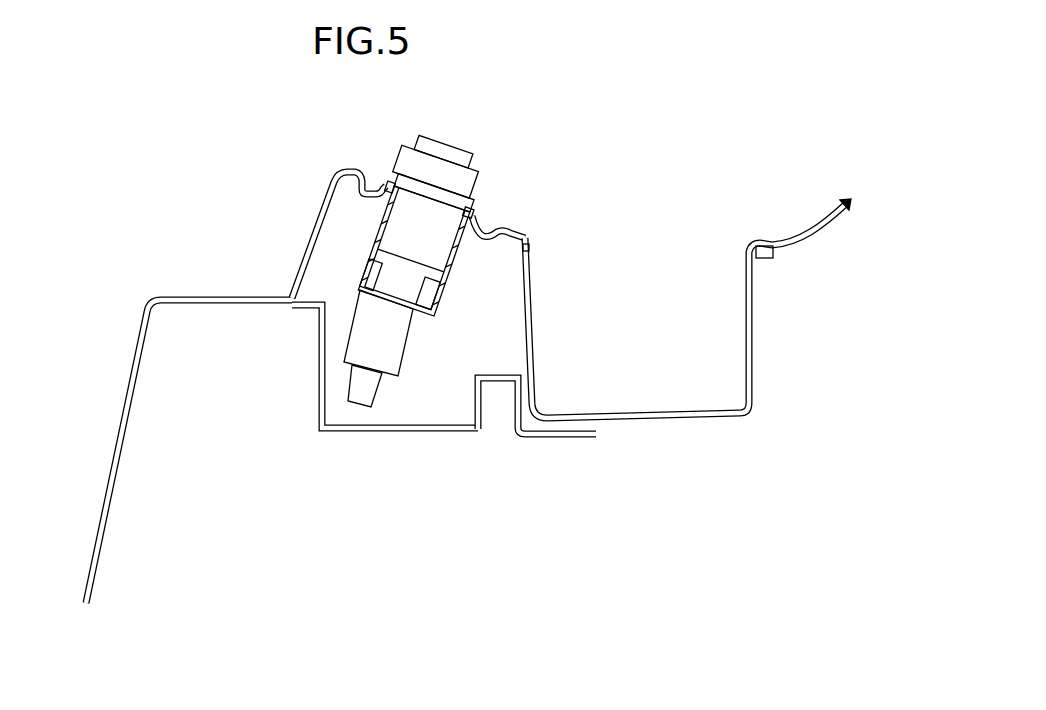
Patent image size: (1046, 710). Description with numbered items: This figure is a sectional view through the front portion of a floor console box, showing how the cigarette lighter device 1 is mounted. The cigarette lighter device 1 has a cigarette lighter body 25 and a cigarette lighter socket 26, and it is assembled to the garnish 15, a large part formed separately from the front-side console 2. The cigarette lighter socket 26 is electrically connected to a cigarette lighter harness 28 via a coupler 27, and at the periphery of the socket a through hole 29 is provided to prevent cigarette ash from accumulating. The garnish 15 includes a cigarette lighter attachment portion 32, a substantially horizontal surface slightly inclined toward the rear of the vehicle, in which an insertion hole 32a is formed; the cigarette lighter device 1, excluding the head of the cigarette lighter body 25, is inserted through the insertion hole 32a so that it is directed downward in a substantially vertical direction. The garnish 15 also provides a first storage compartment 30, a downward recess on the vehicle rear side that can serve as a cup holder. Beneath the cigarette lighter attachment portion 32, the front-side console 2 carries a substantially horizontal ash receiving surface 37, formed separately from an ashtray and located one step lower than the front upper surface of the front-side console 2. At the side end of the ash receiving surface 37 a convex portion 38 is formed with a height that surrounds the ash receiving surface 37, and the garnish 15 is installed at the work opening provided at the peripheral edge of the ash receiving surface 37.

The cigarette lighter device 1 is at (425, 259).
The front-side console 2 is at (151, 290).
The garnish 15 is at (531, 236).
The cigarette lighter body 25 is at (458, 169).
The cigarette lighter socket 26 is at (408, 295).
The coupler 27 is at (353, 331).
The cigarette lighter harness 28 is at (350, 393).
The through hole 29 is at (431, 291).
The first storage compartment 30 is at (751, 314).
The cigarette lighter attachment portion 32 is at (500, 231).
The insertion hole 32a is at (470, 219).
The ash receiving surface 37 is at (358, 432).
The convex portion 38 is at (498, 376).